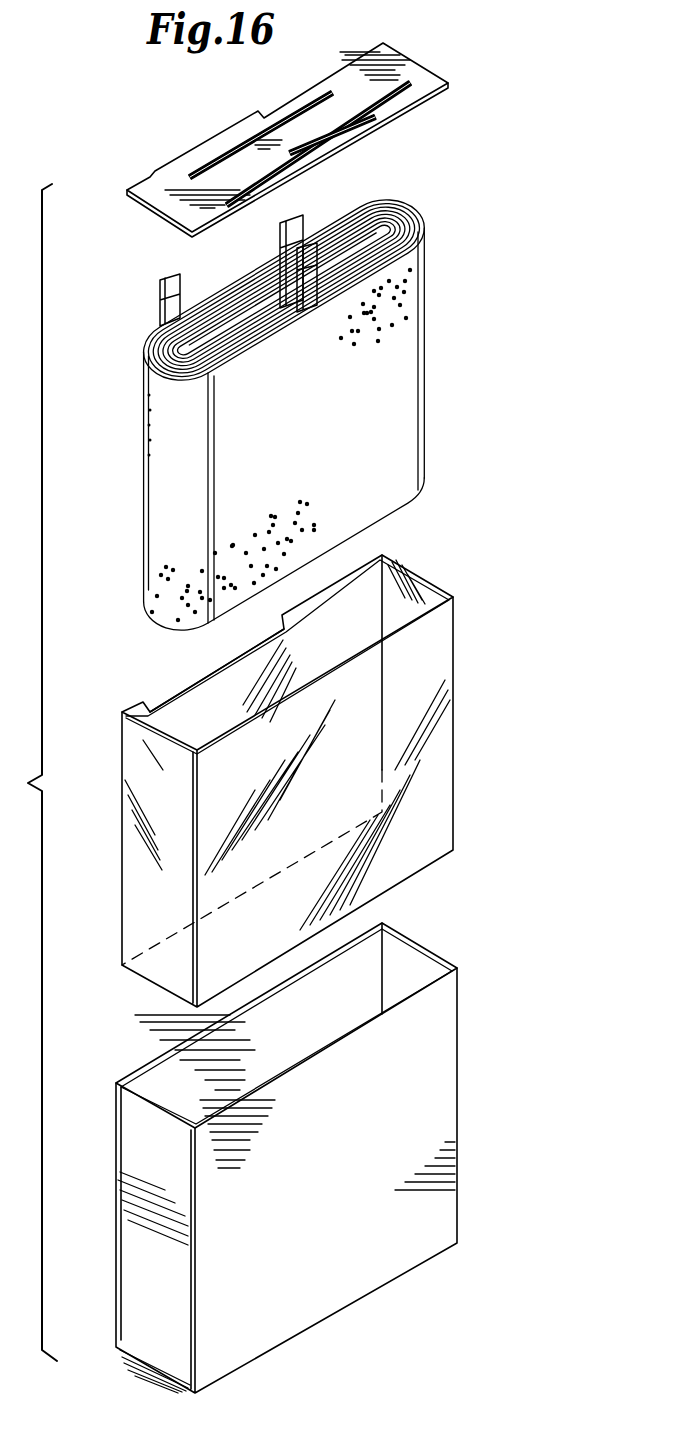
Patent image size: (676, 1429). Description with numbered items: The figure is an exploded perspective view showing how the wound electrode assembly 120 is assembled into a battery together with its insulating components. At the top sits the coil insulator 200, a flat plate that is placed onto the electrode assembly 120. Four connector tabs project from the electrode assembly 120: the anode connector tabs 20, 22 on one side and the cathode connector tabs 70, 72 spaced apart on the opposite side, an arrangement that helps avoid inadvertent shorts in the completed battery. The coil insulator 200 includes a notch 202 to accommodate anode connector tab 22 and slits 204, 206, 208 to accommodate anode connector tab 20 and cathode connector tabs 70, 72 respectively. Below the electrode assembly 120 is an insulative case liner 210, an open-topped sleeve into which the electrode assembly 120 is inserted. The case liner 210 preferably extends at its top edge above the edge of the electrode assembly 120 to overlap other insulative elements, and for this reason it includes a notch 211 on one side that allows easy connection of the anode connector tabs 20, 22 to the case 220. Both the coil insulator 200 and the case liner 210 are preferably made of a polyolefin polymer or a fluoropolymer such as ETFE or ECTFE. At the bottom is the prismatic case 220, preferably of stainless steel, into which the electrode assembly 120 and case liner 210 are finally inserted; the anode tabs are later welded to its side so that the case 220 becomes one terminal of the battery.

The coil insulator 200 is at (290, 684).
The notch 202 is at (210, 147).
The slit 204 is at (307, 113).
The slit 206 is at (367, 100).
The slit 208 is at (360, 128).
The electrode assembly 120 is at (437, 343).
The cathode connector tab 70 is at (353, 206).
The anode connector tab 22 is at (177, 270).
The anode connector tab 20 is at (297, 221).
The cathode connector tab 72 is at (290, 290).
The case liner 210 is at (462, 692).
The notch 211 is at (183, 697).
The prismatic case 220 is at (470, 1045).